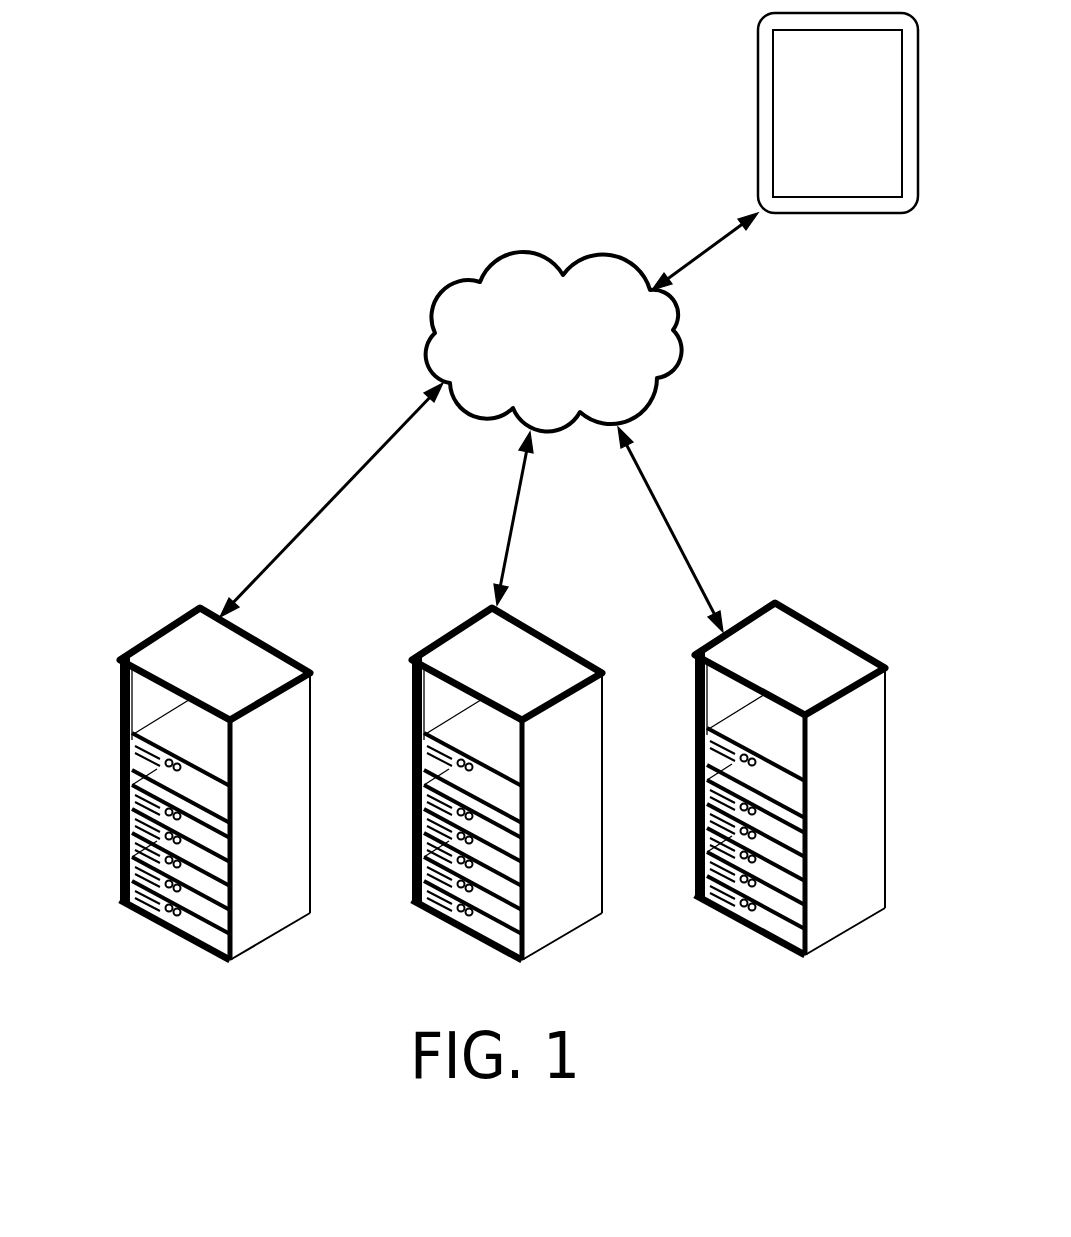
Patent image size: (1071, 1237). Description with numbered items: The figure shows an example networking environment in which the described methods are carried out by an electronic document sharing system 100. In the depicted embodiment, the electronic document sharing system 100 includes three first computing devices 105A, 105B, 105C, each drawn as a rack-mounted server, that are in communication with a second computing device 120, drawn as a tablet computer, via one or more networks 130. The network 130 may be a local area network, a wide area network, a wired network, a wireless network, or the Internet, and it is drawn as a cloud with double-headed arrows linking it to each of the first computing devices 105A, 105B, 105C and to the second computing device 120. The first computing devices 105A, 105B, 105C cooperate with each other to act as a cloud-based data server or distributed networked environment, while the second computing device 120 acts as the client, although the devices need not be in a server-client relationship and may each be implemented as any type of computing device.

The electronic document sharing system 100 is at (758, 1025).
The first computing device 105A is at (167, 730).
The first computing device 105B is at (457, 730).
The first computing device 105C is at (740, 726).
The second computing device 120 is at (757, 173).
The network 130 is at (680, 353).